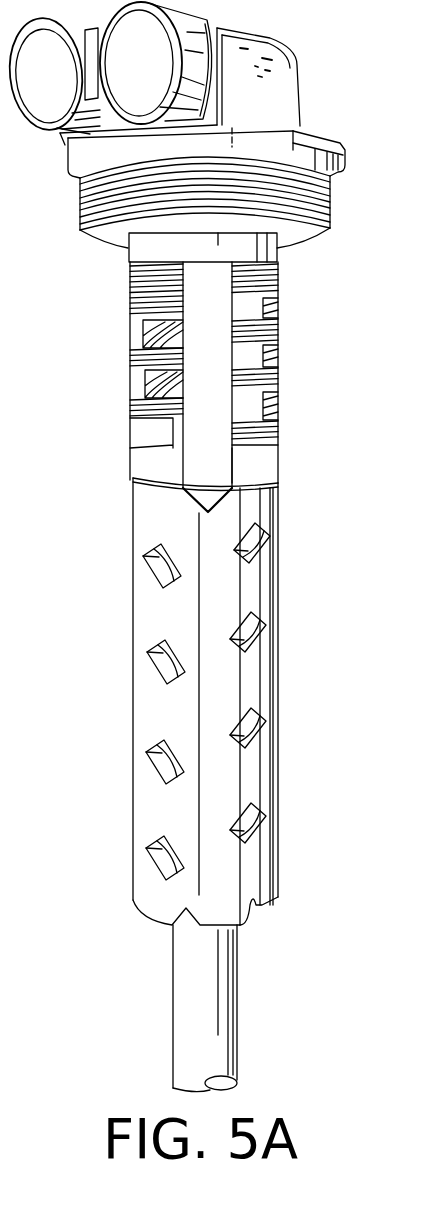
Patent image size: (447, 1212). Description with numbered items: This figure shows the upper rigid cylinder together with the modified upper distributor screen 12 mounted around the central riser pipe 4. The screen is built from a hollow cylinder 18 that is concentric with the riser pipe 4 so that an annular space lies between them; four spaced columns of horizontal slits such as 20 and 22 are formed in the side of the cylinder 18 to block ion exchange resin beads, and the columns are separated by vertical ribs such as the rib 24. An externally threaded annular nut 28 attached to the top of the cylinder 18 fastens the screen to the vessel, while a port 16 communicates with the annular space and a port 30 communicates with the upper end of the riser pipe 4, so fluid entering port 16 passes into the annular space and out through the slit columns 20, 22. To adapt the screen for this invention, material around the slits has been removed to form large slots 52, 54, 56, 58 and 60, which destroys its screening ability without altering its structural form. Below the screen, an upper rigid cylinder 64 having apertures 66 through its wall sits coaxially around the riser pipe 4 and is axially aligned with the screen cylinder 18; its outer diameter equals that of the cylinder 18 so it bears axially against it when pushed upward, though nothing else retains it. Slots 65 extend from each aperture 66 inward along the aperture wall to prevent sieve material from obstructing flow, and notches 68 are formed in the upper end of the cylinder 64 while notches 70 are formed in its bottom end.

The riser pipe 4 is at (237, 1013).
The upper distributor screen 12 is at (338, 283).
The port 16 is at (65, 94).
The hollow cylinder 18 is at (278, 272).
The horizontal slits 20 is at (143, 295).
The horizontal slits 22 is at (270, 334).
The vertical rib 24 is at (225, 420).
The externally threaded annular nut 28 is at (345, 165).
The port 30 is at (158, 80).
The large slot 52 is at (158, 340).
The large slot 54 is at (148, 375).
The large slot 56 is at (265, 313).
The large slot 58 is at (265, 358).
The large slot 60 is at (267, 402).
The upper rigid cylinder 64 is at (278, 675).
The slots 65 is at (160, 555).
The apertures 66 is at (160, 650).
The notches 68 is at (253, 488).
The notches 70 is at (250, 910).